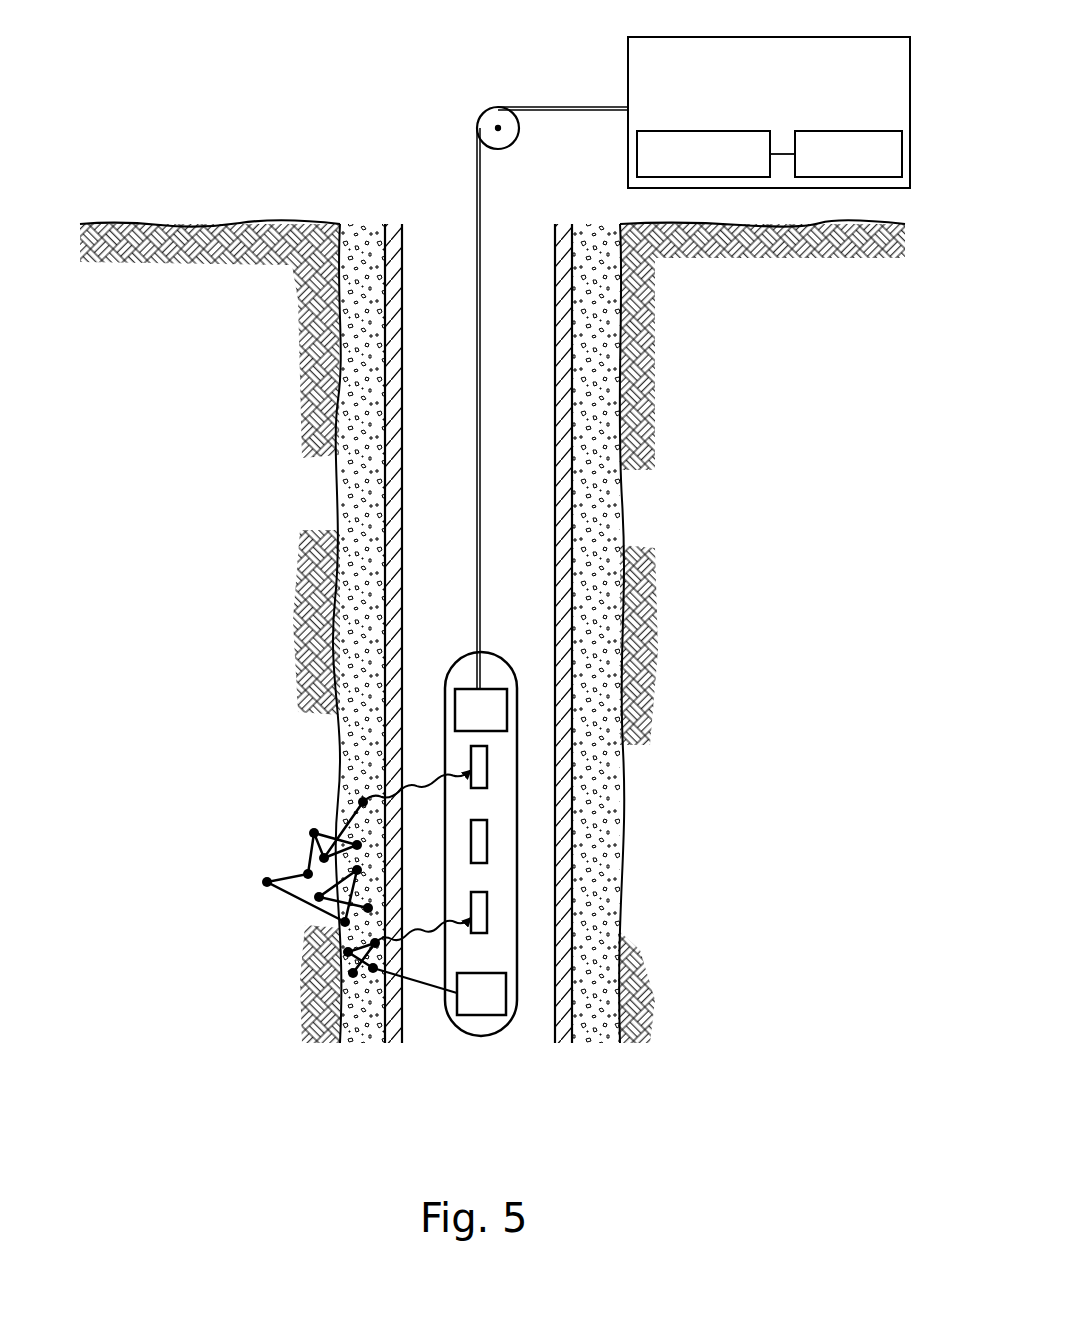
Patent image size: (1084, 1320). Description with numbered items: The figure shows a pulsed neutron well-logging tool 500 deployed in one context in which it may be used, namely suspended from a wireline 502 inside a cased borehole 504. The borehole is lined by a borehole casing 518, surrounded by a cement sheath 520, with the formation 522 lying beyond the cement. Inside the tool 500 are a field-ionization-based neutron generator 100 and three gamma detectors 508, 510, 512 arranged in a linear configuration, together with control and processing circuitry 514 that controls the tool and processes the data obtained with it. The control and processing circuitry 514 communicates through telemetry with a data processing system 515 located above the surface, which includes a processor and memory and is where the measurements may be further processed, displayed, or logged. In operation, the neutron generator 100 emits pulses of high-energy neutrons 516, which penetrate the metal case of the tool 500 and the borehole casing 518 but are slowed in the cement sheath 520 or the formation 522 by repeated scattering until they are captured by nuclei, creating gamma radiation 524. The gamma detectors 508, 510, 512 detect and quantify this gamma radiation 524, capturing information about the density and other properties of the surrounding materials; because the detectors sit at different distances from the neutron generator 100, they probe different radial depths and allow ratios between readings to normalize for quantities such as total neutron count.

The neutron generator 100 is at (506, 992).
The pulsed neutron well-logging tool 500 is at (513, 672).
The wireline 502 is at (482, 353).
The cased borehole 504 is at (401, 180).
The gamma detector 508 is at (487, 910).
The gamma detector 510 is at (487, 840).
The gamma detector 512 is at (487, 765).
The control and processing circuitry 514 is at (506, 709).
The data processing system 515 is at (762, 37).
The high-energy neutrons 516 is at (353, 973).
The borehole casing 518 is at (385, 473).
The cement sheath 520 is at (356, 621).
The formation 522 is at (205, 348).
The gamma radiation 524 is at (420, 925).